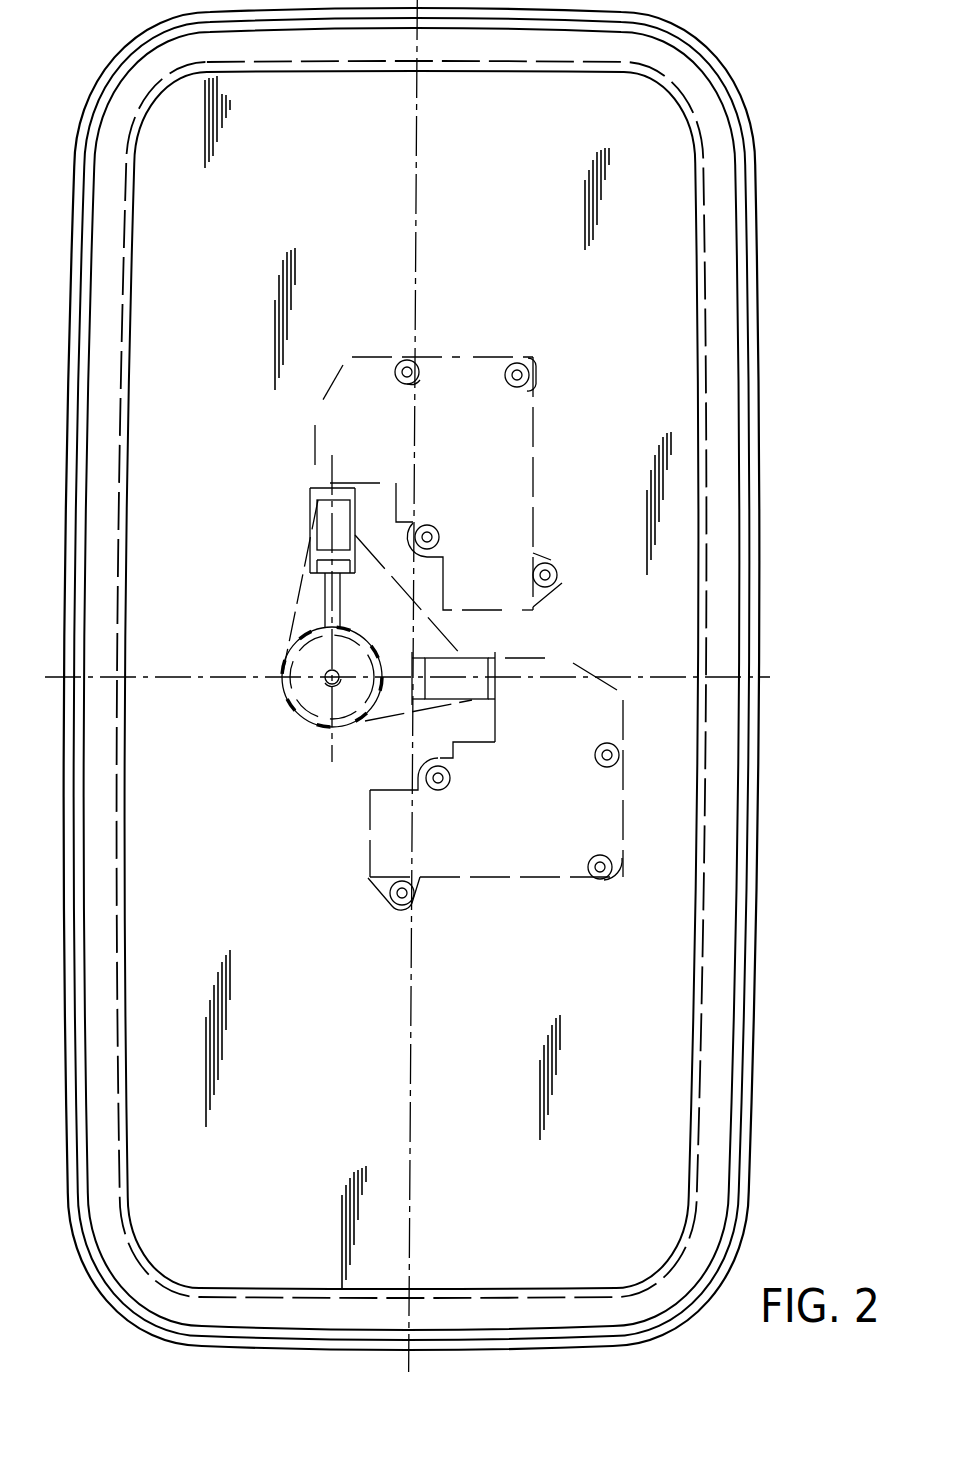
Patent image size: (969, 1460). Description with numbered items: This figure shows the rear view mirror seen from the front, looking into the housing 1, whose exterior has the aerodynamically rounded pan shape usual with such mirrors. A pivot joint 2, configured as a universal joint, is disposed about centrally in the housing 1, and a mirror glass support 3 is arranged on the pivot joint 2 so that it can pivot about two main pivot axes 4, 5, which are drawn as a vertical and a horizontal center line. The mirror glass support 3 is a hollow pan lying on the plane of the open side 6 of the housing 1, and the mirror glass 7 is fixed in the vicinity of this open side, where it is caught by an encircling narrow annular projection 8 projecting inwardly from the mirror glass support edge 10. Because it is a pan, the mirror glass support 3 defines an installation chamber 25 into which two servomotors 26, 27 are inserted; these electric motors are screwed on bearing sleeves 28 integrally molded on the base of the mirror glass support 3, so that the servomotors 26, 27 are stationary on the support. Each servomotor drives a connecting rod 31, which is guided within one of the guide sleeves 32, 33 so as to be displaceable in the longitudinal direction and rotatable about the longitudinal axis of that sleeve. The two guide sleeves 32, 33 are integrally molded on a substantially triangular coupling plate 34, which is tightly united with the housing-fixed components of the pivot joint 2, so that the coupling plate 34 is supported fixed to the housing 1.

The housing 1 is at (720, 59).
The pivot joint 2 is at (289, 727).
The mirror glass support 3 is at (722, 358).
The main pivot axis 4 is at (416, 176).
The main pivot axis 5 is at (216, 680).
The open side 6 is at (672, 1064).
The mirror glass 7 is at (650, 517).
The annular projection 8 is at (698, 299).
The mirror glass support edge 10 is at (722, 228).
The installation chamber 25 is at (575, 491).
The servomotor 26 is at (510, 846).
The servomotor 27 is at (502, 475).
The bearing sleeve 28 is at (405, 362).
The connecting rod 31 is at (315, 514).
The guide sleeve 32 is at (468, 657).
The guide sleeve 33 is at (313, 532).
The coupling plate 34 is at (393, 618).